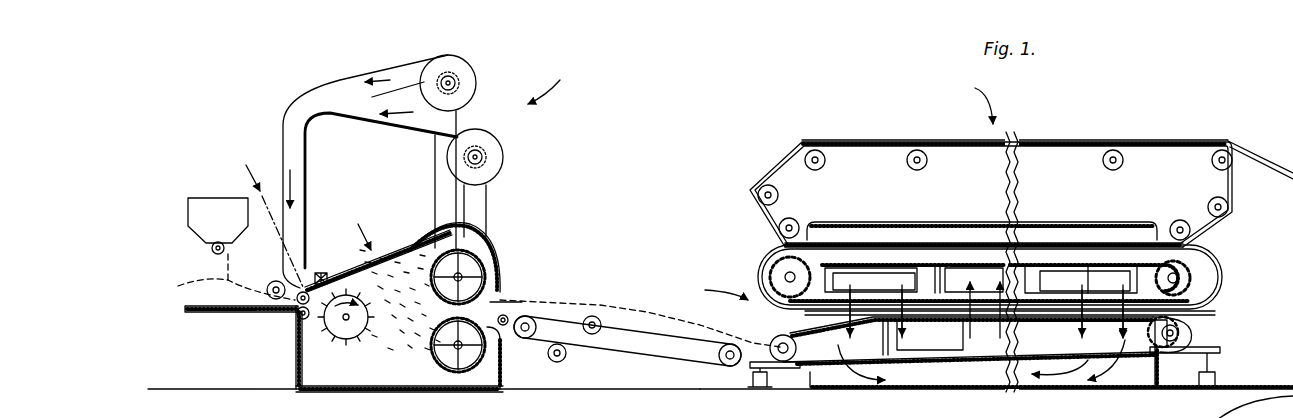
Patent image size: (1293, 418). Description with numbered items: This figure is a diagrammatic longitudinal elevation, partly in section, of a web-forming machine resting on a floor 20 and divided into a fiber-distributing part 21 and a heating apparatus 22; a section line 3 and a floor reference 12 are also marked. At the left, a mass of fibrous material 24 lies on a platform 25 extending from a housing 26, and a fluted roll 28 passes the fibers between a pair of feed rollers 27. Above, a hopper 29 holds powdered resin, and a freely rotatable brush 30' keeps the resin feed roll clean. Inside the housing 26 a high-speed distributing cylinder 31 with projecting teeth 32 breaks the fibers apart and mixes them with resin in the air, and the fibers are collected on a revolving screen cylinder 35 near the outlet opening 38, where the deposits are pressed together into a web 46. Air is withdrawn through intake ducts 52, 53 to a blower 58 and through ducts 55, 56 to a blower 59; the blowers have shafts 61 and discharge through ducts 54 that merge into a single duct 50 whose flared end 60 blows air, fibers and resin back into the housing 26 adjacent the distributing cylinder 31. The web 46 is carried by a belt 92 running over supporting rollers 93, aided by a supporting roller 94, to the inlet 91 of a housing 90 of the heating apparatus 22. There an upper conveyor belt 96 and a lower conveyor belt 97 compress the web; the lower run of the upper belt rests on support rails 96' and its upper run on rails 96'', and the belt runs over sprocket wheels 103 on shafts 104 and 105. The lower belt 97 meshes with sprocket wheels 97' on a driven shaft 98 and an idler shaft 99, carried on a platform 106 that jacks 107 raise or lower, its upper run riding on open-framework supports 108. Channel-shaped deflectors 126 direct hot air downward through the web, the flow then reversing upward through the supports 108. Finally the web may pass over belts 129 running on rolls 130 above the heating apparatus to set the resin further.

The section line 3- 3 is at (303, 215).
The floor 12 is at (1192, 396).
The floor 20 is at (178, 389).
The fiber distributing part 21 is at (550, 82).
The heating apparatus 22 is at (983, 235).
The mass of fibrous material 24 is at (176, 286).
The platform 25 is at (206, 311).
The housing 26 is at (296, 366).
The feed rollers 27 is at (320, 273).
The fluted roll 28 is at (275, 286).
The hopper 29 is at (200, 202).
The brush 30' is at (191, 258).
The distributing cylinder 31 is at (348, 342).
The teeth 32 is at (370, 343).
The screen cylinder 35 is at (411, 251).
The outlet opening 38 is at (510, 292).
The web 46 is at (566, 300).
The duct 50 is at (300, 96).
The intake duct 52 is at (486, 198).
The intake duct 53 is at (482, 134).
The discharge duct 54 is at (403, 61).
The intake duct 55 is at (438, 186).
The intake duct 56 is at (446, 50).
The blower 58 is at (506, 144).
The blower 59 is at (472, 68).
The flared end 60 is at (310, 262).
The shaft 61 is at (462, 84).
The housing 90 is at (1024, 224).
The inlet 91 is at (715, 286).
The belt 92 is at (649, 316).
The supporting rollers 93 is at (524, 338).
The supporting roller 94 is at (506, 316).
The upper conveyor belt 96 is at (954, 277).
The support rails 96' is at (982, 222).
The rails 96'' is at (964, 229).
The lower conveyor belt 97 is at (943, 322).
The sprocket wheels 97' is at (989, 360).
The driven shaft 98 is at (1180, 334).
The idler shaft 99 is at (782, 360).
The sprocket wheels 103 is at (766, 260).
The shaft 104 is at (760, 244).
The shaft 105 is at (1182, 278).
The platform 106 is at (846, 381).
The jacks 107 is at (756, 387).
The supports 108 is at (916, 330).
The channels 126 is at (936, 258).
The belts 129 is at (784, 174).
The rolls 130 is at (904, 160).